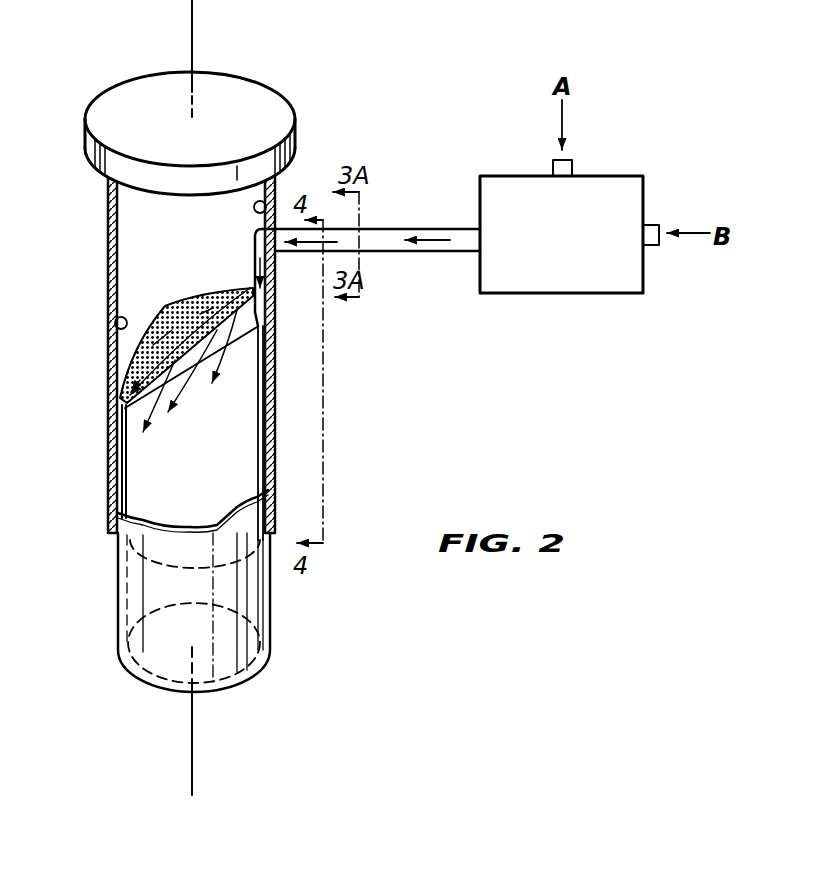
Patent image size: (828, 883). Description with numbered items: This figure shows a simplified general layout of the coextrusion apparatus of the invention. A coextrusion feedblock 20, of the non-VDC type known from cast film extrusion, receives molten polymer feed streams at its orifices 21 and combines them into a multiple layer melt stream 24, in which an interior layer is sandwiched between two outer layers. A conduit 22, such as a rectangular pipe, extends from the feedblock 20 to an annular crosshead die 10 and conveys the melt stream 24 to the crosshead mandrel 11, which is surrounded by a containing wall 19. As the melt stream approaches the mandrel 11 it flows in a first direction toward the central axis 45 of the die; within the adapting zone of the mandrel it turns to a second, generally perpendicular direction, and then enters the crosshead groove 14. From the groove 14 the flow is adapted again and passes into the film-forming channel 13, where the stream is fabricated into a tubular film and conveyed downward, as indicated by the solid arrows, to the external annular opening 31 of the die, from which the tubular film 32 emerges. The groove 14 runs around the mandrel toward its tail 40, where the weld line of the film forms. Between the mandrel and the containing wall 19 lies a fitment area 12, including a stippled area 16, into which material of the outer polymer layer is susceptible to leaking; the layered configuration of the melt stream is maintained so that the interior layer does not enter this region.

The annular crosshead die 10 is at (263, 75).
The crosshead mandrel 11 is at (130, 230).
The fitment area 12 is at (113, 338).
The channel 13 is at (265, 402).
The crosshead groove 14 is at (270, 318).
The stippled area 16 is at (142, 356).
The containing wall 19 is at (108, 298).
The coextrusion feedblock 20 is at (611, 158).
The orifices 21 is at (552, 170).
The conduit 22 is at (445, 229).
The melt stream 24 is at (372, 243).
The external annular opening 31 is at (270, 547).
The tubular film 32 is at (270, 648).
The tail of groove 40 is at (122, 420).
The central axis 45 is at (192, 18).